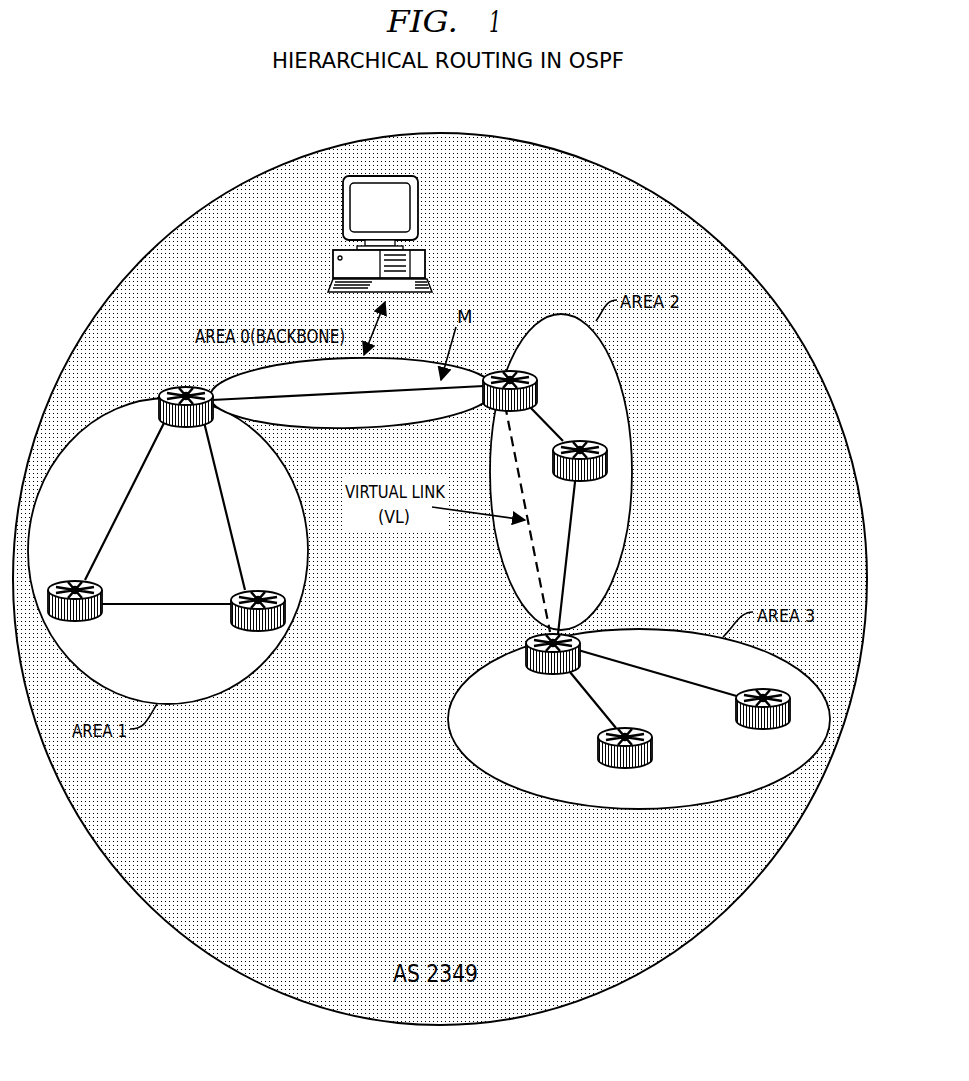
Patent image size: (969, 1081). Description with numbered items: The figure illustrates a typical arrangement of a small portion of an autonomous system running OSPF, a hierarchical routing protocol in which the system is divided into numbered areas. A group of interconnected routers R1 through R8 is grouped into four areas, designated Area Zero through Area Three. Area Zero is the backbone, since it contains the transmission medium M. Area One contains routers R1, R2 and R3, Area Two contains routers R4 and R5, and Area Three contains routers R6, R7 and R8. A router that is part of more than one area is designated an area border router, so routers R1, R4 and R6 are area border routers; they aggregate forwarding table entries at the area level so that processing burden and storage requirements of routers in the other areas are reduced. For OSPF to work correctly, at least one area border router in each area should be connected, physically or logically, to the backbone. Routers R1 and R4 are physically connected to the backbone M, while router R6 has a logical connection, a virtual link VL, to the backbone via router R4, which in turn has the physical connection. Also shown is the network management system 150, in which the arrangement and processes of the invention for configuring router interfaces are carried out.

The network management system 150 is at (420, 212).
The router R1 is at (186, 420).
The router R2 is at (90, 591).
The router R3 is at (246, 601).
The router R4 is at (524, 384).
The router R5 is at (580, 475).
The router R6 is at (547, 665).
The router R7 is at (609, 755).
The router R8 is at (751, 714).